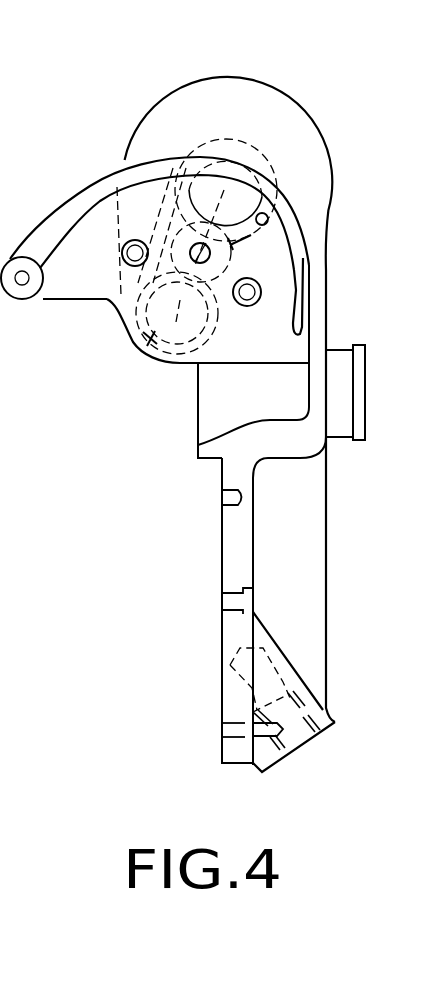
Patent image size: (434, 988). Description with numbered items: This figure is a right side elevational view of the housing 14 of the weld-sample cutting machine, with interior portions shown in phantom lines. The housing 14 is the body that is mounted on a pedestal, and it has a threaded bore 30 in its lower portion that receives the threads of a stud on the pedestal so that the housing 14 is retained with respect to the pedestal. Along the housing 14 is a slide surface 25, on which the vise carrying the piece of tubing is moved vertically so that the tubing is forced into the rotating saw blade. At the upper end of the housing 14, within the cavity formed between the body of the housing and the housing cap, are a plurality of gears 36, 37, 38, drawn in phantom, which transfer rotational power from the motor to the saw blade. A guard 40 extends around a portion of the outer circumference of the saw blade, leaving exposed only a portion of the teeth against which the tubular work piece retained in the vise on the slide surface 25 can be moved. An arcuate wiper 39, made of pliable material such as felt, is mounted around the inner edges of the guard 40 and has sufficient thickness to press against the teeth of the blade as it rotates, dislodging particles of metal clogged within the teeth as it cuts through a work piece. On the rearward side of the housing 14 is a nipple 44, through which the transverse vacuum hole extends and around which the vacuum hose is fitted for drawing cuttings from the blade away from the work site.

The housing 14 is at (335, 538).
The slide surface 25 is at (221, 532).
The threaded bore 30 is at (308, 733).
The gear 36 is at (243, 165).
The gear 37 is at (282, 217).
The gear 38 is at (147, 340).
The arcuate wiper 39 is at (303, 270).
The guard 40 is at (108, 170).
The nipple 44 is at (355, 440).